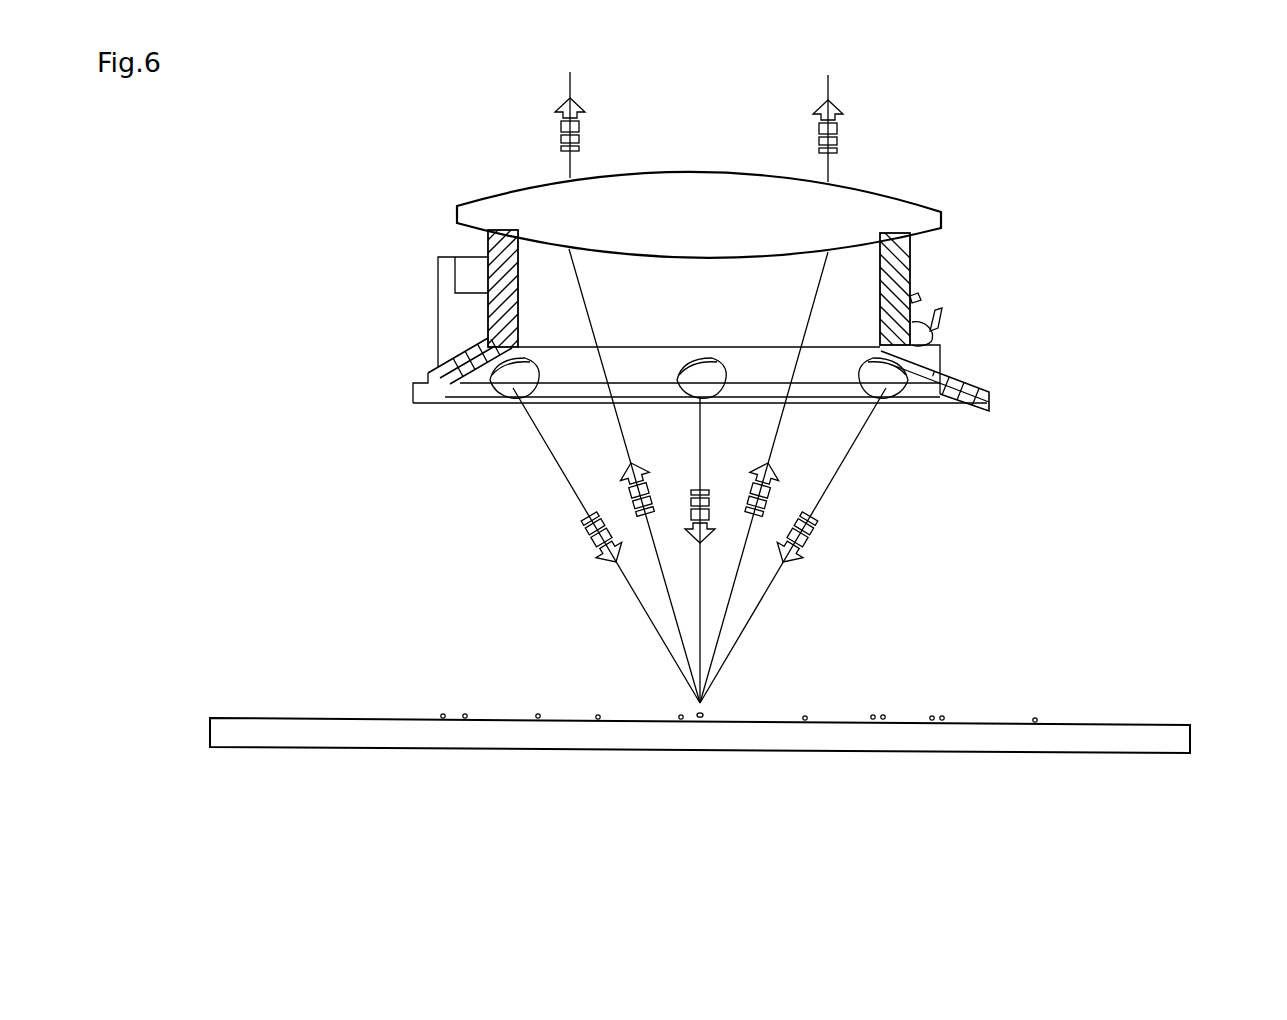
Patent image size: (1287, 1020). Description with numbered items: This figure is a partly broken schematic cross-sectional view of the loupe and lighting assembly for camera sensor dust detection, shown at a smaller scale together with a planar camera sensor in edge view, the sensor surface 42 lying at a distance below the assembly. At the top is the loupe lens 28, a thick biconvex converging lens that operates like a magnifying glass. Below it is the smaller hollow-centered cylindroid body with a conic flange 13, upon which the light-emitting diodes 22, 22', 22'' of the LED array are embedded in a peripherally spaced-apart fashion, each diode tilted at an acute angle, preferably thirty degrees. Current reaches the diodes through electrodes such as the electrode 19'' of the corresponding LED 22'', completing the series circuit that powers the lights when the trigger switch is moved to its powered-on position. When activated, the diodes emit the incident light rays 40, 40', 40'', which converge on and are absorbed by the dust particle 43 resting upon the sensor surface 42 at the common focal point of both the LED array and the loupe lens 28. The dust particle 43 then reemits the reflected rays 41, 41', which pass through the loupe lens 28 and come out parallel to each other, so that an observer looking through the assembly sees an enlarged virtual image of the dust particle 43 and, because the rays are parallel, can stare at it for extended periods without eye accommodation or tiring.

The loupe lens 28 is at (662, 214).
The hollow-centered cylindroid body with a conic flange 13 is at (900, 268).
The electrode 19'' is at (1029, 302).
The light-emitting diode 22 is at (457, 401).
The light-emitting diode 22' is at (574, 428).
The light-emitting diode 22'' is at (975, 413).
The light ray 40 is at (589, 545).
The light ray 40' is at (612, 550).
The light ray 40'' is at (831, 545).
The reflected ray 41 is at (801, 476).
The reflected ray 41' is at (850, 477).
The sensor surface 42 is at (1178, 738).
The dust particle 43 is at (705, 712).